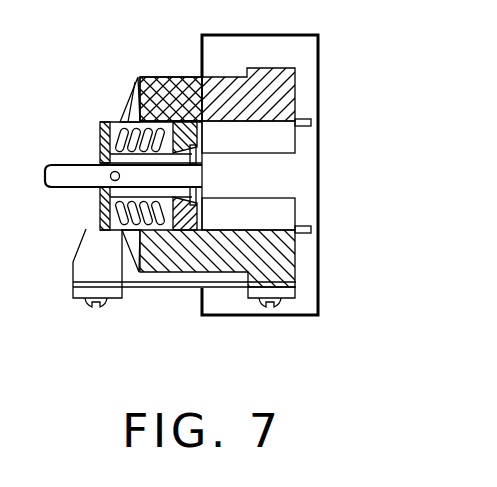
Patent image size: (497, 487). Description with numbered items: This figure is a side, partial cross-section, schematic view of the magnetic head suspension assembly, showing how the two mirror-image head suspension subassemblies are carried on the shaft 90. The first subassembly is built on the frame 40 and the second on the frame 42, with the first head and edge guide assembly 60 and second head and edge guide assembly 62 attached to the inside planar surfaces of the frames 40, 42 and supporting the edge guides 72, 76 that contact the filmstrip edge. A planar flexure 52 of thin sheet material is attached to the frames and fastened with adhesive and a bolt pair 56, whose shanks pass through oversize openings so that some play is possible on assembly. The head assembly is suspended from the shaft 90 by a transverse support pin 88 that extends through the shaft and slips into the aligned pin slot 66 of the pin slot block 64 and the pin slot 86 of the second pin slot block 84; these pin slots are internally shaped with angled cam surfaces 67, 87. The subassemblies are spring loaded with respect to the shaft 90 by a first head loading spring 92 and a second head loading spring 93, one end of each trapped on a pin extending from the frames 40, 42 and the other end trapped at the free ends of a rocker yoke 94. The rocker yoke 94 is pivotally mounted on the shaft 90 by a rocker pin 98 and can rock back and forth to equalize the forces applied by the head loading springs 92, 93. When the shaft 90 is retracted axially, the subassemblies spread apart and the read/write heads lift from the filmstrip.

The frame 40 is at (268, 68).
The pin slot block 64 is at (205, 100).
The angled cam surface 67 is at (138, 77).
The head loading spring 92 is at (128, 107).
The transverse support pin 88 is at (160, 77).
The rocker yoke 94 is at (100, 123).
The shaft 90 is at (50, 166).
The rocker pin 98 is at (110, 177).
The angled cam surface 87 is at (197, 191).
The pin slot 86 is at (200, 204).
The head loading spring 93 is at (118, 230).
The bolt pair 56 is at (96, 307).
The planar flexure 52 is at (160, 287).
The second pin slot block 84 is at (195, 237).
The frame 42 is at (296, 272).
The first head and edge guide assembly 60 is at (296, 135).
The second head and edge guide assembly 62 is at (296, 212).
The filmstrip edge guide 76 is at (310, 124).
The filmstrip edge guide 72 is at (311, 228).
The pin slot 66 is at (203, 146).